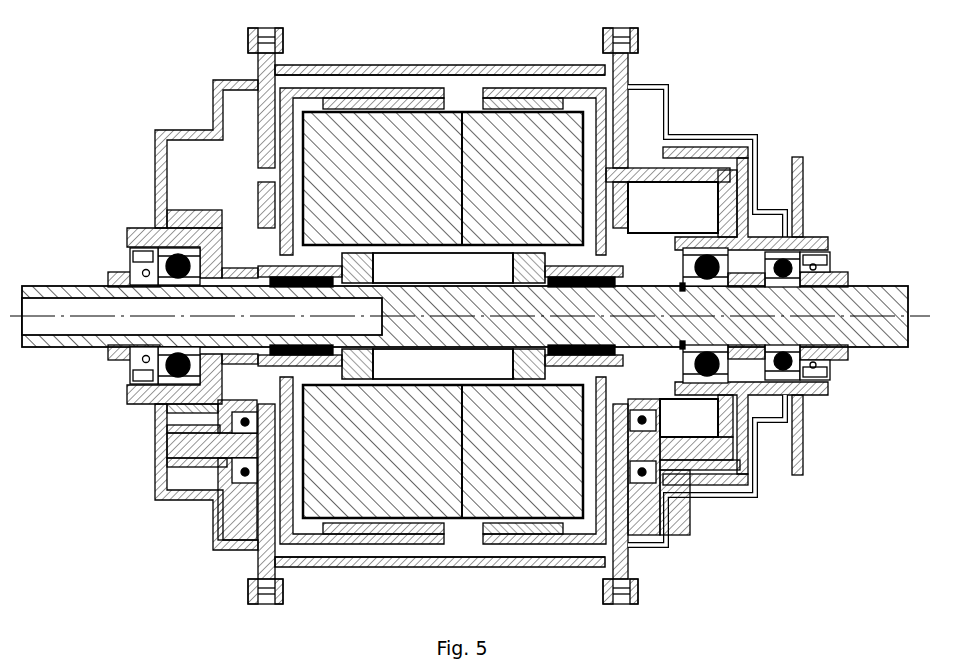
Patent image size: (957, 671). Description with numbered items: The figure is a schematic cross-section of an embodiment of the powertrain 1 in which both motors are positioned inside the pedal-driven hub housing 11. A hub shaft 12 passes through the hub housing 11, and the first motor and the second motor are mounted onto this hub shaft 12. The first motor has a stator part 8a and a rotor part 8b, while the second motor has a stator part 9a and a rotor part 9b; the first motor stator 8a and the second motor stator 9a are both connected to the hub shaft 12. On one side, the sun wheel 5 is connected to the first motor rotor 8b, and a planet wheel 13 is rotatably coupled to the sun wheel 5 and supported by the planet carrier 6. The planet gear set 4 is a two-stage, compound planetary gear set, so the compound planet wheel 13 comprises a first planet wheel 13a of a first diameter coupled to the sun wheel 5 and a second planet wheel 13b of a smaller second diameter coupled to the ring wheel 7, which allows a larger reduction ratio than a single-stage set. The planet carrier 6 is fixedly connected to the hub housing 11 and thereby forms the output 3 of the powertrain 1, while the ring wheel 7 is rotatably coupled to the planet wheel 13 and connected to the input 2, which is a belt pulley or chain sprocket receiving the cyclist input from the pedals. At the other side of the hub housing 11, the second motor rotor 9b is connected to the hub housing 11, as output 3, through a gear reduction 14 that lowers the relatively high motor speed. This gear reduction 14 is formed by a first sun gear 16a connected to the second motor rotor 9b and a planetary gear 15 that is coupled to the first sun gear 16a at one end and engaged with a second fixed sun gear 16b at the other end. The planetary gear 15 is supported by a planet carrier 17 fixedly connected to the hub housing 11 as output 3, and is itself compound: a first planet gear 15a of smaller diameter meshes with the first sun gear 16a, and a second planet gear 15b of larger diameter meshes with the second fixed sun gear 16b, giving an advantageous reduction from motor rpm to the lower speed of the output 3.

The powertrain 1 is at (708, 48).
The input 2 is at (812, 192).
The output 3 is at (406, 68).
The planet gear set 4 is at (695, 161).
The sun wheel 5 is at (647, 272).
The planet carrier 6 is at (682, 448).
The ring wheel 7 is at (742, 205).
The stator part of first motor 8a is at (505, 468).
The rotor part of first motor 8b is at (520, 103).
The stator part of second motor 9a is at (382, 468).
The rotor part of second motor 9b is at (366, 100).
The hub housing 11 is at (437, 68).
The hub shaft 12 is at (855, 316).
The planet wheel 13 is at (660, 470).
The first planet wheel 13a is at (645, 498).
The second planet wheel 13b is at (687, 465).
The gear reduction 14 is at (171, 154).
The planetary gear 15 is at (227, 465).
The first planet gear 15a is at (240, 498).
The second planet gear 15b is at (200, 467).
The first sun gear 16a is at (198, 221).
The second fixed sun gear 16b is at (250, 278).
The planet carrier 17 is at (215, 448).